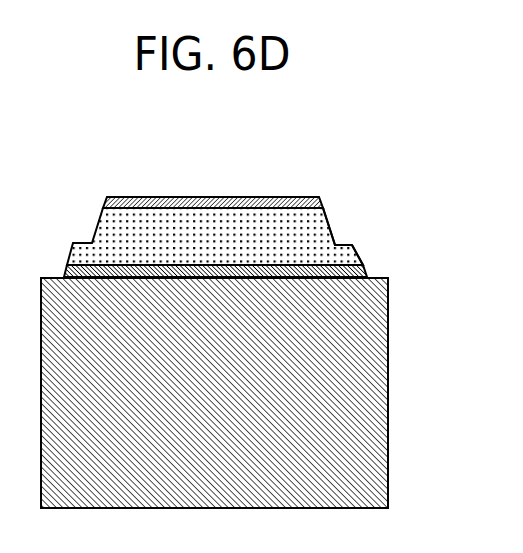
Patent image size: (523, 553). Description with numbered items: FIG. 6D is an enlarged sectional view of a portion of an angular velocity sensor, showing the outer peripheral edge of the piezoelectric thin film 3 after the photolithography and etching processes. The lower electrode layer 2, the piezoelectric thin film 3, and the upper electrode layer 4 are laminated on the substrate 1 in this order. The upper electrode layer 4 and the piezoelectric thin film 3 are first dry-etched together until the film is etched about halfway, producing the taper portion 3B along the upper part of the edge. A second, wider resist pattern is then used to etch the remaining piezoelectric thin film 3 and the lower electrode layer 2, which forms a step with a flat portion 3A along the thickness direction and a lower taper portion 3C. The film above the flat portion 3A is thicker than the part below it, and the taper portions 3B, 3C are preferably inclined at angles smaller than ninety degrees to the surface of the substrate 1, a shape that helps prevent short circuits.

The substrate 1 is at (378, 368).
The lower electrode layer 2 is at (138, 276).
The piezoelectric thin film 3 is at (173, 240).
The flat portion 3A is at (345, 245).
The taper portion 3B is at (327, 222).
The taper portion 3C is at (360, 255).
The upper electrode layer 4 is at (235, 197).